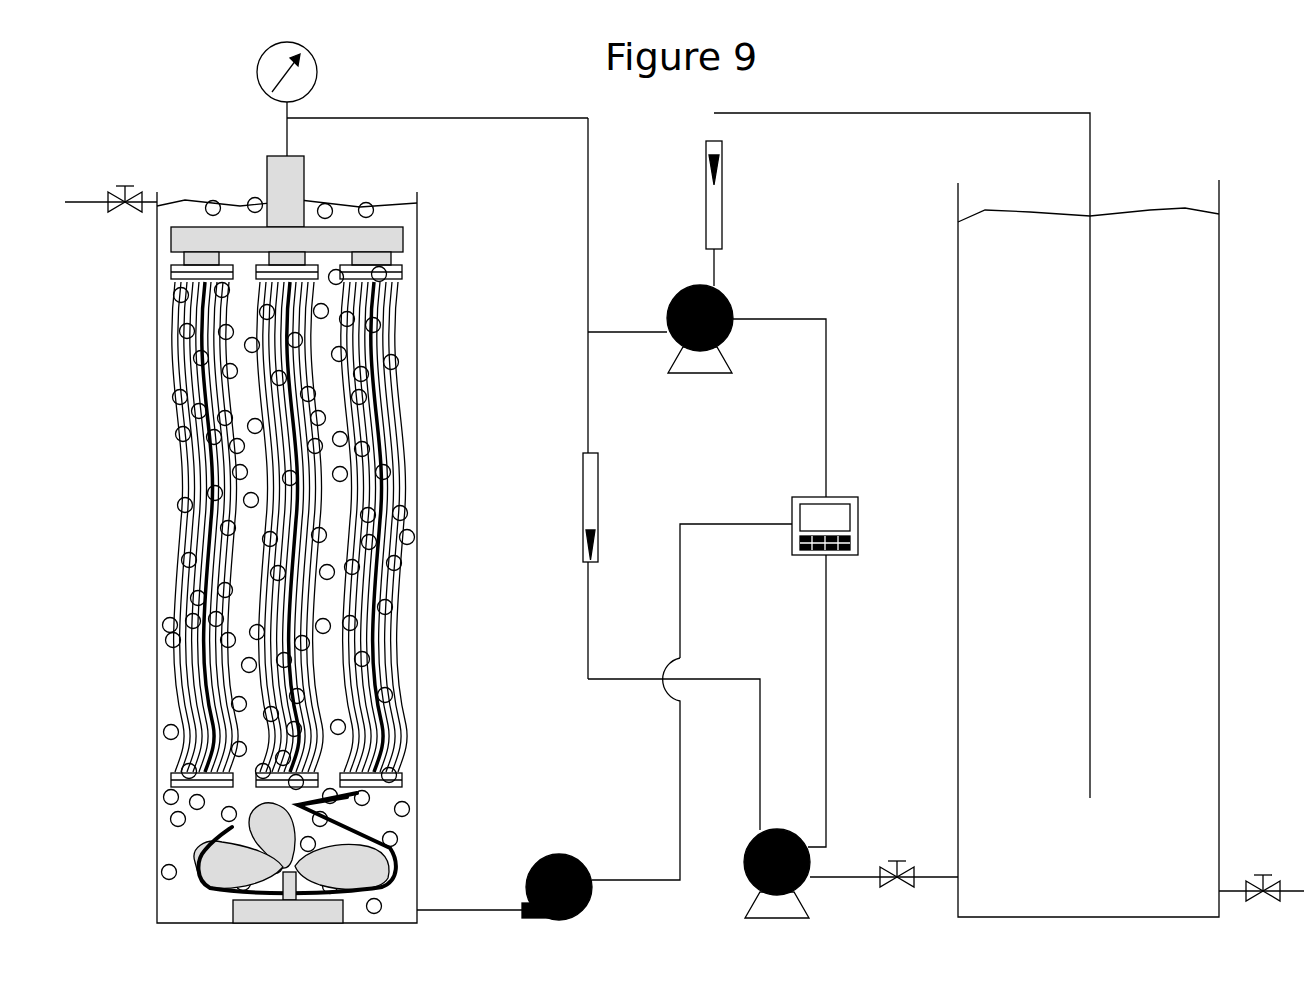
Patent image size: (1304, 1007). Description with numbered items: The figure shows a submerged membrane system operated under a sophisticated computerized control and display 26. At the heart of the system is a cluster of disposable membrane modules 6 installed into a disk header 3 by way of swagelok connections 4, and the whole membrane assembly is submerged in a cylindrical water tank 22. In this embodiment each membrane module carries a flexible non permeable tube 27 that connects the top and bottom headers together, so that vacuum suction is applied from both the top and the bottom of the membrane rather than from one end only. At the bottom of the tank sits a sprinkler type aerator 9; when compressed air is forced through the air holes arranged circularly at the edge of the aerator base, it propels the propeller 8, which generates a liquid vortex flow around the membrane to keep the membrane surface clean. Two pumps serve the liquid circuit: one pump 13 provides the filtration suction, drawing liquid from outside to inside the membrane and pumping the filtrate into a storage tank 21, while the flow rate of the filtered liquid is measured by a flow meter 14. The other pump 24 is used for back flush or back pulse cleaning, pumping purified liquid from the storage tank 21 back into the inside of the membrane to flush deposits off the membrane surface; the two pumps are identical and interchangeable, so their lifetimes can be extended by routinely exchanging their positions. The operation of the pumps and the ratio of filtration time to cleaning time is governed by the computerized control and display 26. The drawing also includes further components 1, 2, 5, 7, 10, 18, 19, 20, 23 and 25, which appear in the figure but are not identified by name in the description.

The pressure gauge 1 is at (281, 71).
The outlet connector 2 is at (285, 191).
The disk header 3 is at (287, 240).
The swagelok connection 4 is at (371, 265).
The potting header 5 is at (202, 275).
The disposable membrane modules 6 is at (312, 522).
The bottom header 7 is at (286, 786).
The propeller 8 is at (295, 843).
The sprinkler type aerator 9 is at (288, 899).
The air blower 10 is at (557, 870).
The pump 13 is at (717, 329).
The flow meter 14 is at (737, 195).
The drain valve 18 is at (1261, 869).
The feed valve 19 is at (111, 186).
The air bubbles 20 is at (168, 623).
The storage tank 21 is at (1088, 548).
The cylindrical water tank 22 is at (157, 435).
The valve 23 is at (884, 856).
The pump 24 is at (777, 862).
The flow meter 25 is at (605, 507).
The computerized control and display 26 is at (841, 526).
The flexible non permeable tube 27 is at (385, 417).